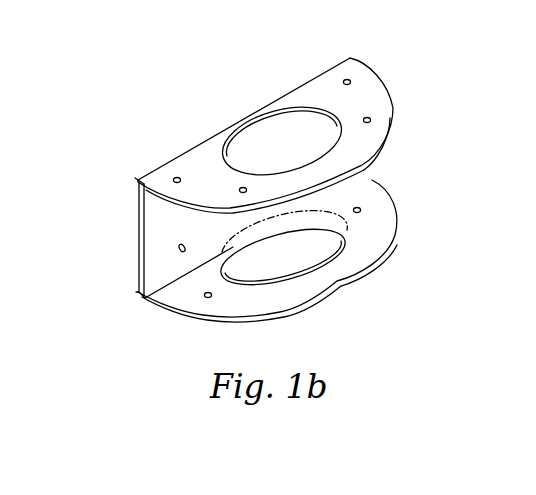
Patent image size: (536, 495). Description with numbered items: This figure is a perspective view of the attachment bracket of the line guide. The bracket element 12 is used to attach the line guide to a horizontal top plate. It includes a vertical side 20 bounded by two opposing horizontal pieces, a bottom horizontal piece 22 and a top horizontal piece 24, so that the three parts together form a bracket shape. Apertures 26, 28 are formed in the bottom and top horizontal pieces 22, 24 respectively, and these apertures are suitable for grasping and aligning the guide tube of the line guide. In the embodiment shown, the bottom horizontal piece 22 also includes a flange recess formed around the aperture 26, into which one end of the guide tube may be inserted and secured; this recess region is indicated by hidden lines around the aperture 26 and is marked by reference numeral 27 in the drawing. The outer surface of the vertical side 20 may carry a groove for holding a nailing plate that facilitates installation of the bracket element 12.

The bracket element 12 is at (241, 194).
The vertical side 20 is at (140, 223).
The bottom horizontal piece 22 is at (203, 315).
The top horizontal piece 24 is at (210, 162).
The aperture 26 is at (297, 260).
The hidden boss 27 is at (297, 237).
The aperture 28 is at (277, 138).